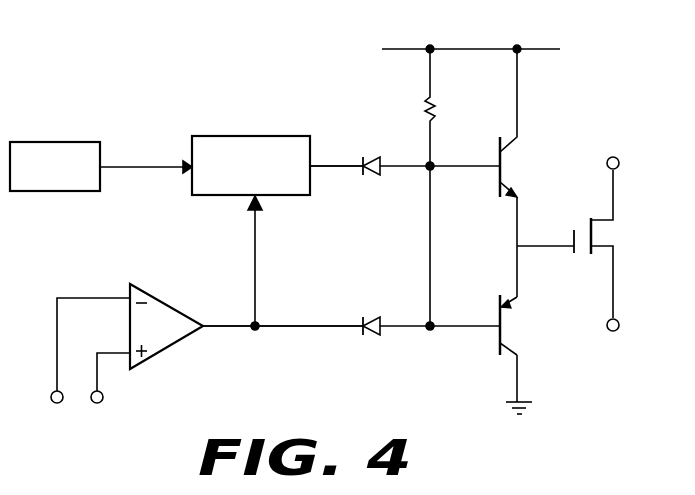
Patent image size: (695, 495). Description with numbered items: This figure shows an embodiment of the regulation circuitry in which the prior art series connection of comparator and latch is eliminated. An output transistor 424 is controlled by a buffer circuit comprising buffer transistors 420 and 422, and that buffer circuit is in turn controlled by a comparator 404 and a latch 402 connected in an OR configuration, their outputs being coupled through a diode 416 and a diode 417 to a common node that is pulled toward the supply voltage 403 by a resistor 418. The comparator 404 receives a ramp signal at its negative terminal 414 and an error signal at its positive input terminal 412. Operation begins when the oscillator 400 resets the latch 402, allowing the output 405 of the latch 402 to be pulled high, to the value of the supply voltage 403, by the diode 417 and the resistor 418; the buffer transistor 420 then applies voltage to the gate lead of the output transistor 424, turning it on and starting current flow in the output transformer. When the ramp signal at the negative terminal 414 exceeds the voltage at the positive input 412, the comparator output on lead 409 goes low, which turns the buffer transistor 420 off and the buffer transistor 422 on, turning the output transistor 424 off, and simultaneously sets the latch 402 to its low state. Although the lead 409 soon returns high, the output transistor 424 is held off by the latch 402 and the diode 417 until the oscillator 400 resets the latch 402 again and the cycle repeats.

The oscillator 400 is at (71, 142).
The latch 402 is at (248, 136).
The supply voltage 403 is at (463, 49).
The comparator 404 is at (160, 305).
The output of latch 405 is at (324, 168).
The lead 409 is at (232, 330).
The terminal 412 is at (98, 380).
The negative terminal 414 is at (56, 378).
The diode 416 is at (370, 318).
The diode 417 is at (371, 158).
The resistor 418 is at (424, 106).
The buffer transistor 420 is at (507, 167).
The buffer transistor 422 is at (508, 331).
The output transistor 424 is at (603, 236).